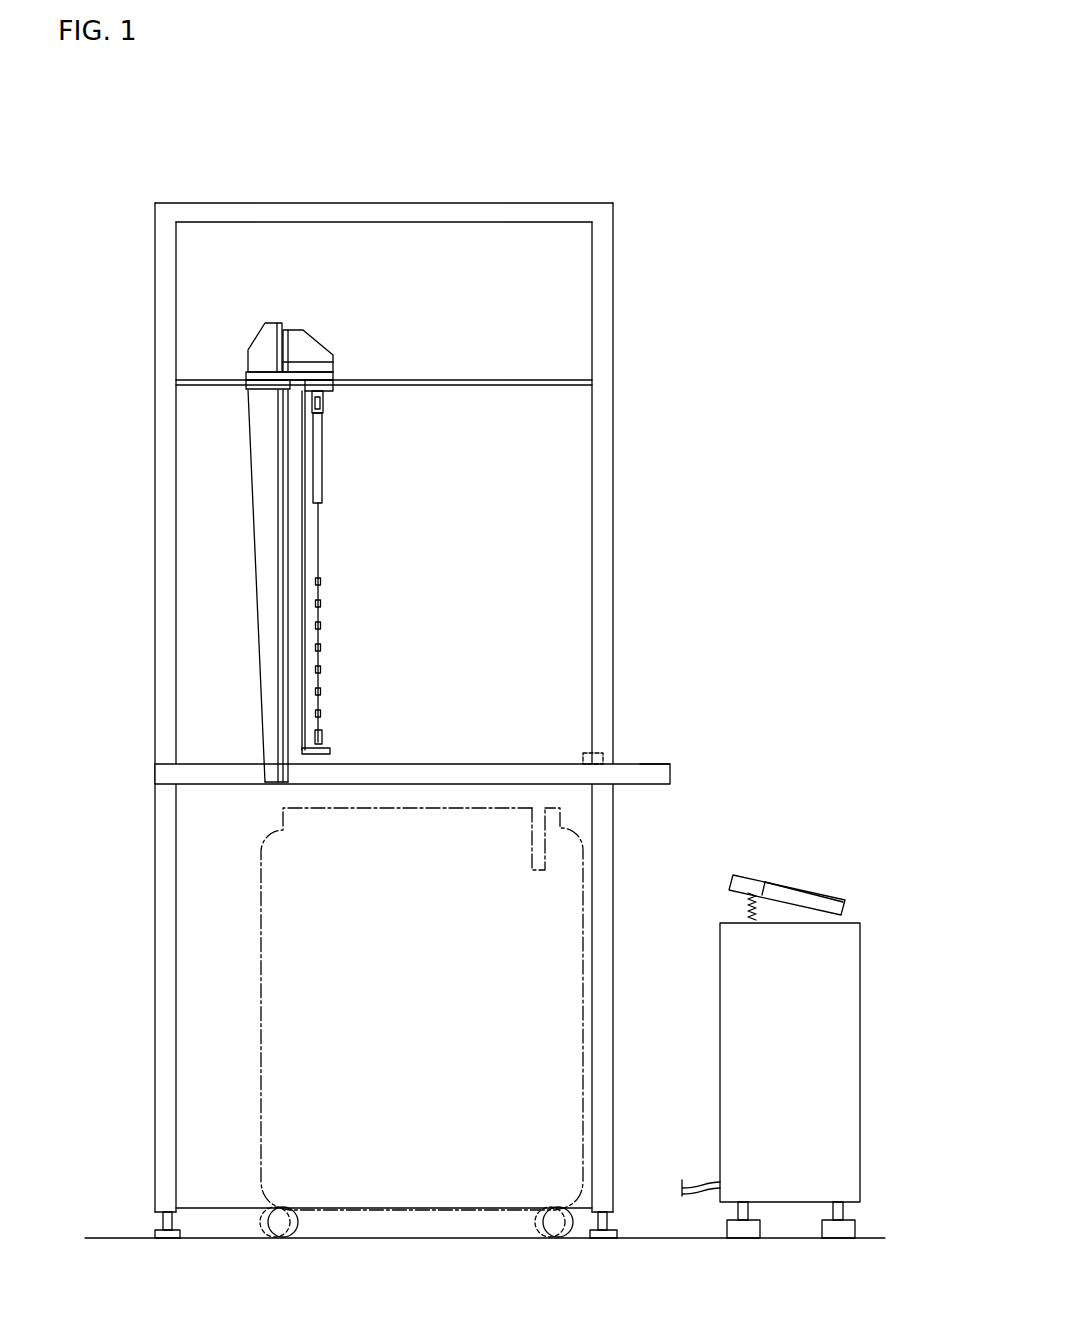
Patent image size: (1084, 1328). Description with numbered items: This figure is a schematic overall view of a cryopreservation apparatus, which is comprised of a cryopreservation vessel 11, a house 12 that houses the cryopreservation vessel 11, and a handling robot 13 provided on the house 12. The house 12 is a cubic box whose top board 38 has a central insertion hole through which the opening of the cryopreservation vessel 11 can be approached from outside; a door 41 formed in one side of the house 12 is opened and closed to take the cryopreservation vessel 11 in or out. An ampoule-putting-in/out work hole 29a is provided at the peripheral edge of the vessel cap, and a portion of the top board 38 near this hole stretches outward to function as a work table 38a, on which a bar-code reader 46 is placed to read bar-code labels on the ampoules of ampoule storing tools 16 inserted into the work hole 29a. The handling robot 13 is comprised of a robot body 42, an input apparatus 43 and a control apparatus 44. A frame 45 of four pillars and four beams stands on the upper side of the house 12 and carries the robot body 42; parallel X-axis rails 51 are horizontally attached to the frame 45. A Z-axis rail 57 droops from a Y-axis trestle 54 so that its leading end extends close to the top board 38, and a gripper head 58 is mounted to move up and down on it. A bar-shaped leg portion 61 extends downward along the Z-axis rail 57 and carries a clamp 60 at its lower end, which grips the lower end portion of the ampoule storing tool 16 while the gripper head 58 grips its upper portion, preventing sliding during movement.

The cryopreservation vessel 11 is at (527, 950).
The house 12 is at (578, 802).
The handling robot 13 is at (358, 358).
The ampoule storing tool 16 is at (323, 468).
The ampoule-putting-in/out work hole 29a is at (534, 846).
The top board 38 is at (433, 775).
The work table 38a is at (645, 770).
The door 41 is at (215, 948).
The robot body 42 is at (243, 460).
The input apparatus 43 is at (797, 884).
The control apparatus 44 is at (838, 1018).
The frame 45 is at (540, 212).
The bar-code reader 46 is at (592, 752).
The X-axis rail 51 is at (471, 381).
The Y-axis trestle 54 is at (256, 334).
The Z-axis rail 57 is at (289, 541).
The gripper head 58 is at (316, 345).
The clamp 60 is at (331, 750).
The leg portion 61 is at (320, 597).